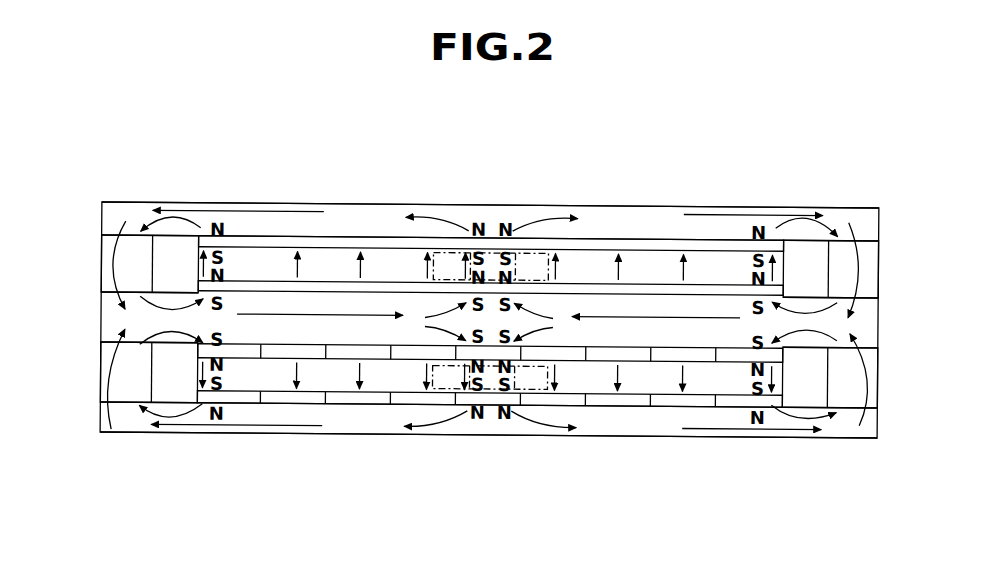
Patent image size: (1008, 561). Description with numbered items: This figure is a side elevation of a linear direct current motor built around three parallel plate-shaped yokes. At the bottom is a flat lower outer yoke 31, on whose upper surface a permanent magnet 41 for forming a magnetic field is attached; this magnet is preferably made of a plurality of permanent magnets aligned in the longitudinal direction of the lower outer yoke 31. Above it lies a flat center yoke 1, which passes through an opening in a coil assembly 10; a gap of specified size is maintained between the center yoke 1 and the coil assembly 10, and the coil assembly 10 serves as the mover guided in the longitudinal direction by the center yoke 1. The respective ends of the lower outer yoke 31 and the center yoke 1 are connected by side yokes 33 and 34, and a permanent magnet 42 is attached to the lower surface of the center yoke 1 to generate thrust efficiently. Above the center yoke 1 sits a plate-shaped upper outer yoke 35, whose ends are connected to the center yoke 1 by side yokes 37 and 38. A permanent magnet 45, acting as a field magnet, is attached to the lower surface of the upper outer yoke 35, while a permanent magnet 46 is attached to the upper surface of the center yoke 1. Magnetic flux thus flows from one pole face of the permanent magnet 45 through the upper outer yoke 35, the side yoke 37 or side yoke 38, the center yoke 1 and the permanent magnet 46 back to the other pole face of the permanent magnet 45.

The center yoke 1 is at (112, 315).
The coil assembly 10 is at (545, 253).
The lower outer yoke 31 is at (467, 436).
The side yoke 33 is at (101, 383).
The side yoke 34 is at (878, 377).
The upper outer yoke 35 is at (485, 205).
The side yoke 37 is at (101, 261).
The side yoke 38 is at (878, 259).
The permanent magnet 41 is at (352, 401).
The permanent magnet 42 is at (647, 360).
The permanent magnet 45 is at (331, 246).
The permanent magnet 46 is at (656, 289).